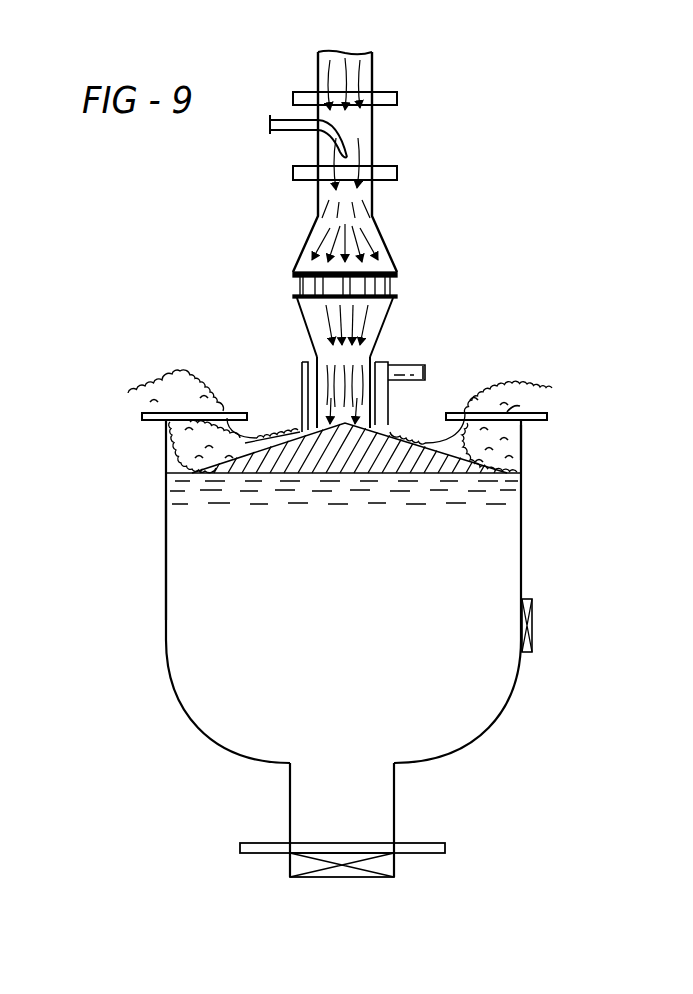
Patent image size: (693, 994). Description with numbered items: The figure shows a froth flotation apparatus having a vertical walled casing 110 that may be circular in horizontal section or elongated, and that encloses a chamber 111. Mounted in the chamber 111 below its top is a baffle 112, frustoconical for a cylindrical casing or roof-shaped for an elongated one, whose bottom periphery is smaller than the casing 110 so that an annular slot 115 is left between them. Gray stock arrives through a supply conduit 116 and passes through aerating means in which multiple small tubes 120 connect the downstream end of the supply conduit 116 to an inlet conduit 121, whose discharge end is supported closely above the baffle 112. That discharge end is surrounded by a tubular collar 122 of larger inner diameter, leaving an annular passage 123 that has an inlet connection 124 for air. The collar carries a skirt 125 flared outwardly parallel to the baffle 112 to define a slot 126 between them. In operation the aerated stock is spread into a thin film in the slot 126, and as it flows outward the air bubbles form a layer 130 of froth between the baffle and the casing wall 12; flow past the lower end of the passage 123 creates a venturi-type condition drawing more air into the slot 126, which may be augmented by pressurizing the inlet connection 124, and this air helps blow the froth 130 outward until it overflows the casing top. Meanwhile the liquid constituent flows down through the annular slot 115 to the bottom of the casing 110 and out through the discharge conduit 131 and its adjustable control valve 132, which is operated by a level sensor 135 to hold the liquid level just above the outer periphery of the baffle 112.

The tank wall 12 is at (523, 437).
The vertical walled casing 110 is at (185, 713).
The chamber 111 is at (176, 591).
The baffle 112 is at (352, 466).
The annular slot 115 is at (523, 482).
The supply conduit 116 is at (363, 73).
The multiple small tubes 120 is at (300, 292).
The inlet conduit 121 is at (317, 350).
The tubular collar 122 is at (390, 343).
The annular passage 123 is at (389, 411).
The inlet connection 124 is at (400, 367).
The skirt 125 is at (252, 437).
The slot 126 is at (268, 440).
The layer of froth 130 is at (505, 390).
The discharge conduit 131 is at (390, 805).
The adjustable control valve 132 is at (388, 862).
The level sensor 135 is at (533, 620).